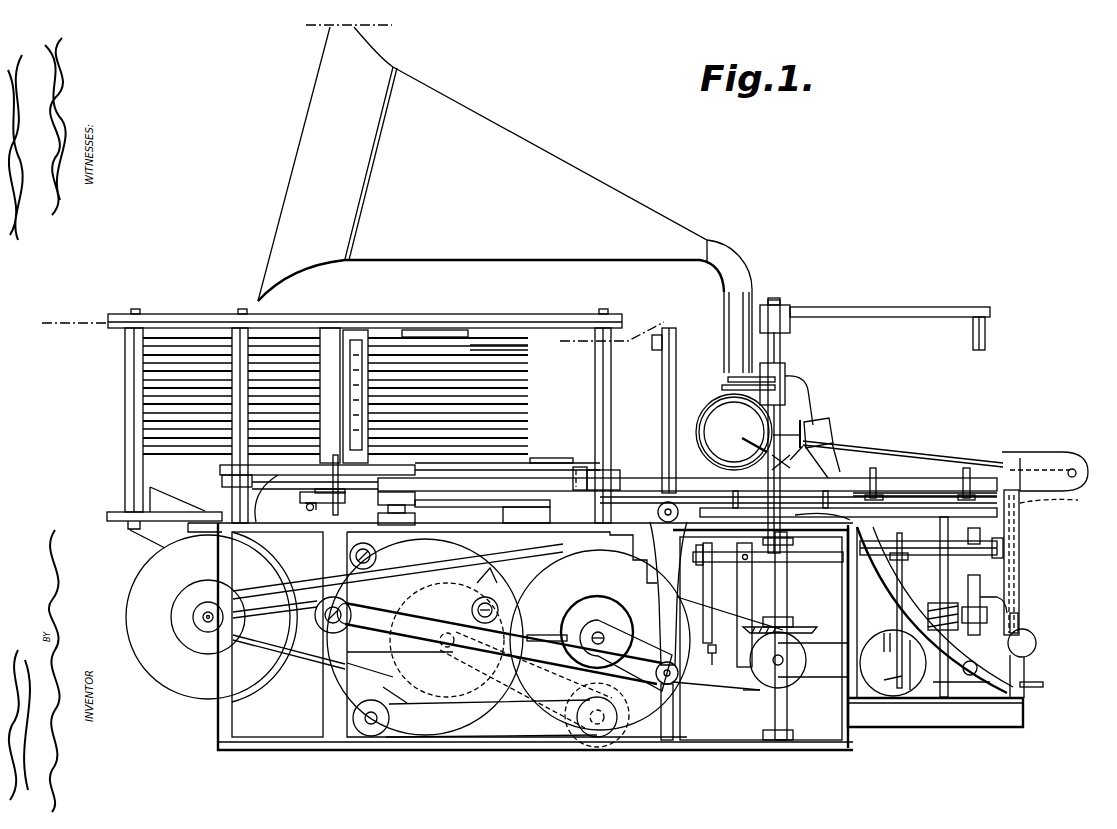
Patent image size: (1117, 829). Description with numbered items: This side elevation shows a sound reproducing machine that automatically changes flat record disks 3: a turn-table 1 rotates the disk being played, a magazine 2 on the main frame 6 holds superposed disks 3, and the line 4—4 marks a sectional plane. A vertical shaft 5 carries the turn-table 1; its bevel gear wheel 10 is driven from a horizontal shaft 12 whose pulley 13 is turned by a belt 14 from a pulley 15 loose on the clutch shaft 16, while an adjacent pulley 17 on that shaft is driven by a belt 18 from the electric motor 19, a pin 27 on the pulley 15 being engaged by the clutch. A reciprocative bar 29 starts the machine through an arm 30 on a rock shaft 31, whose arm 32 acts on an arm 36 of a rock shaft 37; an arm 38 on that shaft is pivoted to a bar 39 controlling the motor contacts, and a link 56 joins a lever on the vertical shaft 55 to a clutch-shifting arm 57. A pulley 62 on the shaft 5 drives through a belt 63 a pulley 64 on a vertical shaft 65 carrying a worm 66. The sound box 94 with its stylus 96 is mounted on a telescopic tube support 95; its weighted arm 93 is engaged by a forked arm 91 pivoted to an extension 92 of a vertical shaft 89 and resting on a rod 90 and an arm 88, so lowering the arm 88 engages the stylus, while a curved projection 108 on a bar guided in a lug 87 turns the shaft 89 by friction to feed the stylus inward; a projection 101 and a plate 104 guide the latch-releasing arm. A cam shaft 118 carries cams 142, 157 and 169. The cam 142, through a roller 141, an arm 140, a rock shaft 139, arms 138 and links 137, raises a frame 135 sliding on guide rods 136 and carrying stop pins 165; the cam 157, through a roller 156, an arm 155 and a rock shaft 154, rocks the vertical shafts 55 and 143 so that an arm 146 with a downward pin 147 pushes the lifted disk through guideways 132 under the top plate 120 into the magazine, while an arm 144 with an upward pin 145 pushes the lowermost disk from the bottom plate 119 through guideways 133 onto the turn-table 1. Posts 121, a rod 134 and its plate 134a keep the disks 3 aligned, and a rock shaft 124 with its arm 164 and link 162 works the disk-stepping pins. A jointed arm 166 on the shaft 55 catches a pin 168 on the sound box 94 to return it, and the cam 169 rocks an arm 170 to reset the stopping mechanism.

The turn-table 1 is at (706, 491).
The magazine 2 is at (159, 471).
The record disks 3 is at (200, 330).
The line 4— 4 is at (349, 320).
The vertical shaft 5 is at (788, 591).
The main frame 6 is at (224, 720).
The bevel gear wheel 10 is at (805, 628).
The horizontal shaft 12 is at (786, 661).
The pulley 13 is at (788, 683).
The belt 14 is at (743, 690).
The pulley 15 is at (588, 616).
The clutch shaft 16 is at (605, 637).
The pulley 17 is at (600, 640).
The belt 18 is at (272, 597).
The motor 19 is at (208, 617).
The pin 27 is at (540, 635).
The reciprocative bar 29 is at (1035, 641).
The arm 30 is at (1019, 597).
The rock shaft 31 is at (990, 545).
The arm 32 is at (902, 579).
The arm 36 is at (893, 663).
The rock shaft 37 is at (718, 562).
The arm 38 is at (740, 597).
The bar 39 is at (722, 664).
The vertical rock shaft 55 is at (776, 300).
The link 56 is at (712, 650).
The arm 57 is at (706, 606).
The pulley 62 is at (850, 521).
The belt 63 is at (876, 510).
The pulley 64 is at (984, 503).
The vertical shaft 65 is at (978, 534).
The worm 66 is at (950, 603).
The lug 87 is at (972, 690).
The arm 88 is at (982, 592).
The vertical shaft 89 is at (1008, 658).
The rod 90 is at (1061, 501).
The horizontal arm 91 is at (888, 448).
The extension 92 is at (1047, 458).
The weighted arm 93 is at (814, 422).
The sound box 94 is at (749, 432).
The telescopic tube support 95 is at (752, 300).
The stylus 96 is at (832, 430).
The projection 101 is at (1034, 687).
The plate 104 is at (912, 683).
The curved projection 108 is at (978, 582).
The cam shaft 118 is at (425, 640).
The bottom plate 119 is at (265, 470).
The top plate 120 is at (168, 313).
The posts 121 is at (250, 326).
The vertical rock shaft 124 is at (322, 490).
The guideways 132 is at (483, 335).
The guideways 133 is at (532, 458).
The rod 134 is at (462, 330).
The plate 134a is at (480, 348).
The frame 135 is at (842, 497).
The guide rods 136 is at (668, 408).
The links 137 is at (668, 621).
The arms 138 is at (622, 690).
The rock shaft 139 is at (330, 626).
The arm 140 is at (398, 574).
The roller 141 is at (490, 603).
The cam 142 is at (526, 680).
The vertical rock shaft 143 is at (416, 511).
The arm 144 is at (480, 483).
The pin 145 is at (575, 483).
The arm 146 is at (880, 308).
The pin 147 is at (988, 341).
The rock shaft 154 is at (372, 728).
The arm 155 is at (400, 713).
The roller 156 is at (350, 555).
The cam 157 is at (400, 570).
The link 162 is at (305, 508).
The arm 164 is at (340, 503).
The stop pins 165 is at (878, 473).
The jointed arm 166 is at (733, 388).
The pin 168 is at (730, 380).
The cam 169 is at (488, 578).
The arm 170 is at (572, 737).